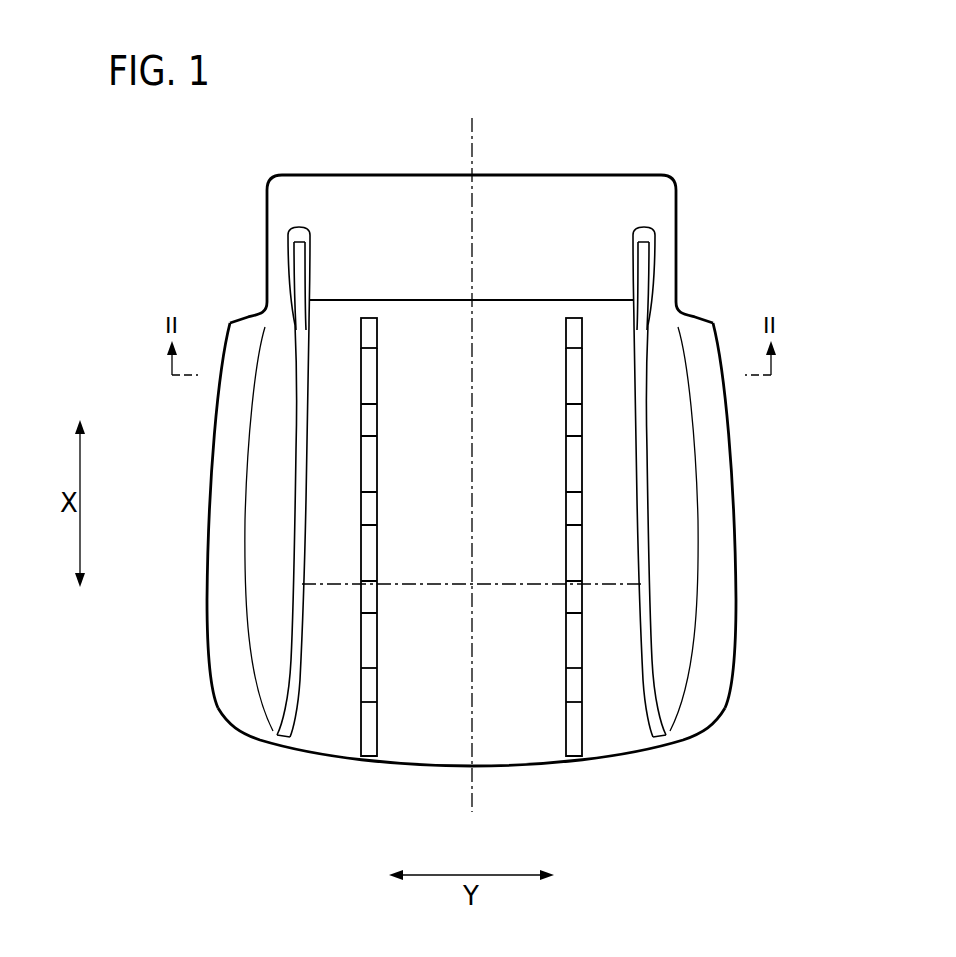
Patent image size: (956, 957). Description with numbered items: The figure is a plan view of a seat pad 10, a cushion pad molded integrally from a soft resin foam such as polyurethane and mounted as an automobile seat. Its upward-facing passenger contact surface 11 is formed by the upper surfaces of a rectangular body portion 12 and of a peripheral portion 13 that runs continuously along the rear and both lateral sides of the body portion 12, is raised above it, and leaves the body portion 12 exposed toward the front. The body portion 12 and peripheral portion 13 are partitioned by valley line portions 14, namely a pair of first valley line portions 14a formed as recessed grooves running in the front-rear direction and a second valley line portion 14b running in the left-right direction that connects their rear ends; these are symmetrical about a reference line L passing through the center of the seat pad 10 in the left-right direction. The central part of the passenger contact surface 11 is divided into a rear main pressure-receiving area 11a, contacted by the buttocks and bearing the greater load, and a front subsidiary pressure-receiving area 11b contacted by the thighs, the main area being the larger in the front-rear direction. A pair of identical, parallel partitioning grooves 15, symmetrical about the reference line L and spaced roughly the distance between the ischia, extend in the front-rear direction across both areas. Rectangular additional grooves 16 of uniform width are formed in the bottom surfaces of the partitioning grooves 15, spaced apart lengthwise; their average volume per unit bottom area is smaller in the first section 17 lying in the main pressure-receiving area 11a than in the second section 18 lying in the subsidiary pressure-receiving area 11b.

The seat pad 10 is at (727, 95).
The passenger contact surface 11 is at (618, 524).
The main pressure-receiving area 11a is at (536, 487).
The subsidiary pressure-receiving area 11b is at (536, 682).
The body portion 12 is at (323, 547).
The peripheral portion 13 is at (224, 497).
The valley line portions 14 is at (472, 430).
The first valley line portions 14a is at (298, 453).
The second valley line portion 14b is at (376, 299).
The partitioning grooves 15 is at (361, 726).
The additional grooves 16 is at (361, 373).
The first section 17 is at (362, 317).
The second section 18 is at (361, 684).
The reference line L is at (473, 141).